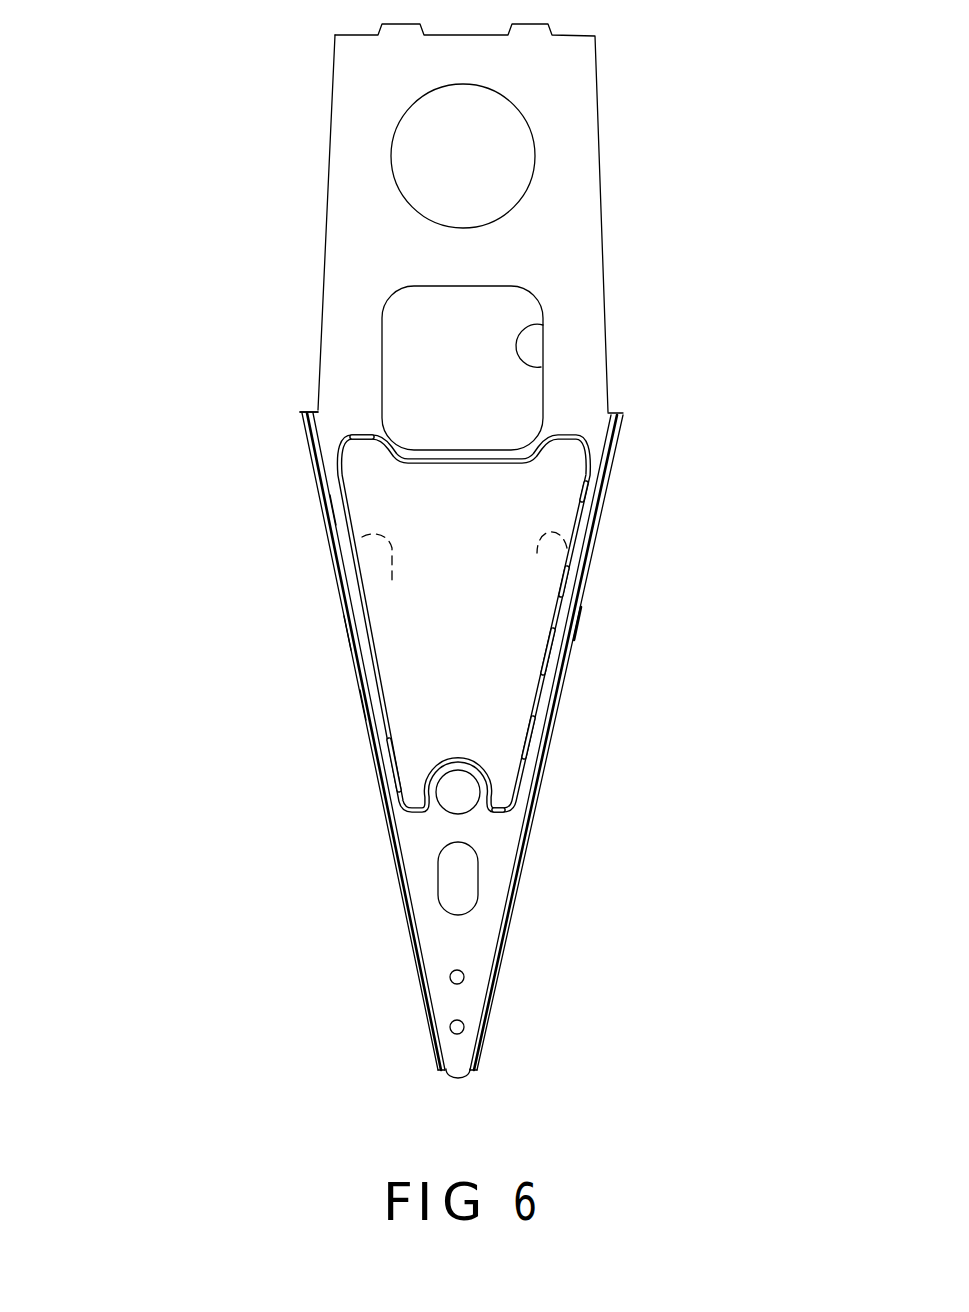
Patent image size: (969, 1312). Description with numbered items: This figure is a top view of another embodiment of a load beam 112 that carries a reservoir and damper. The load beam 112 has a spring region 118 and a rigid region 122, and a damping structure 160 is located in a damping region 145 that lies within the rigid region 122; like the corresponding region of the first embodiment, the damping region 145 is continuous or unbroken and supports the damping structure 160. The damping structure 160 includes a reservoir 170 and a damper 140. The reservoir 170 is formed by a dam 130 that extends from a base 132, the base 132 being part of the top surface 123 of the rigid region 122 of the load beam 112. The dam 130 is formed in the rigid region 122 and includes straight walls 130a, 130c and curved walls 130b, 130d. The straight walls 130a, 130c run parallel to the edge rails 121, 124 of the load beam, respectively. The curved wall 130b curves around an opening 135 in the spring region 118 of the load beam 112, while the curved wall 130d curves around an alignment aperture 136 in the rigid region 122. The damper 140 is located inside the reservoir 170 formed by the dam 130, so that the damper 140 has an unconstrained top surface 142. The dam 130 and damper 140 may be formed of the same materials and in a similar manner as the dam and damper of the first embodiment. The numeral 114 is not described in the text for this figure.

The mounting plate 114 is at (597, 115).
The spring region 118 is at (323, 251).
The opening 135 is at (541, 367).
The dam 130 is at (588, 415).
The load beam 112 is at (641, 444).
The reservoir 170 is at (588, 484).
The curved wall 130b is at (367, 436).
The top surface 123 is at (333, 422).
The damping region 145 is at (567, 548).
The damping structure 160 is at (343, 510).
The damper 140 is at (560, 587).
The base 132 is at (362, 537).
The edge rail 124 is at (580, 623).
The rigid region 122 is at (347, 632).
The straight wall 130c is at (545, 658).
The edge rail 121 is at (358, 705).
The unconstrained top surface 142 is at (505, 735).
The straight wall 130a is at (392, 744).
The curved wall 130d is at (488, 820).
The alignment aperture 136 is at (467, 813).